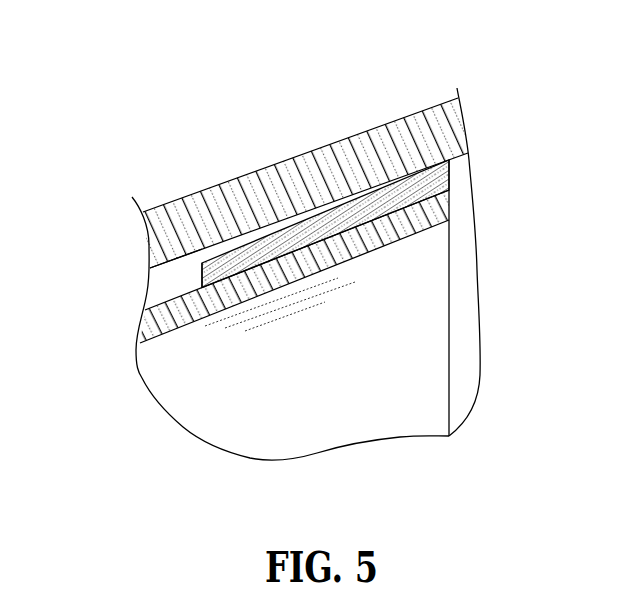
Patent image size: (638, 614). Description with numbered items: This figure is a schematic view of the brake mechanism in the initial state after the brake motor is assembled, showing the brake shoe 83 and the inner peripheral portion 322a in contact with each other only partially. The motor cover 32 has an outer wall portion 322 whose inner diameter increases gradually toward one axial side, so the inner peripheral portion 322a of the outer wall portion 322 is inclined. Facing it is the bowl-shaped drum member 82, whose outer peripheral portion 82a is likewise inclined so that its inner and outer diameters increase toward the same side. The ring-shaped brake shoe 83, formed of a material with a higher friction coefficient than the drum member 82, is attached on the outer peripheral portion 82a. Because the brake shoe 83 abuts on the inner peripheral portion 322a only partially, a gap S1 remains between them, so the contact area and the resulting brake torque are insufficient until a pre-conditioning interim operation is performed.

The motor cover 32 is at (275, 185).
The outer wall portion 322 is at (415, 112).
The inner peripheral portion 322a is at (183, 262).
The gap S1 is at (212, 253).
The brake shoe 83 is at (450, 175).
The outer peripheral portion 82a is at (371, 231).
The drum member 82 is at (275, 415).